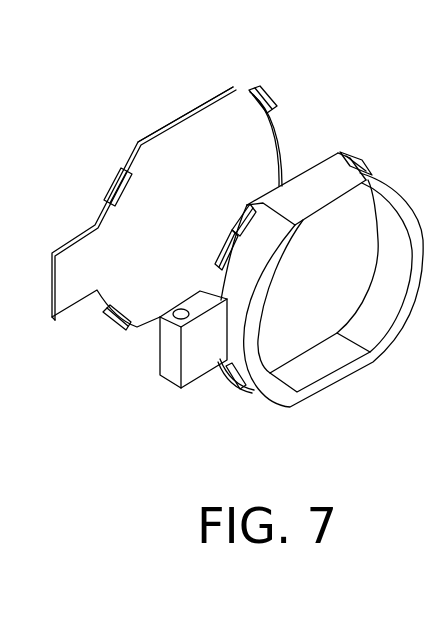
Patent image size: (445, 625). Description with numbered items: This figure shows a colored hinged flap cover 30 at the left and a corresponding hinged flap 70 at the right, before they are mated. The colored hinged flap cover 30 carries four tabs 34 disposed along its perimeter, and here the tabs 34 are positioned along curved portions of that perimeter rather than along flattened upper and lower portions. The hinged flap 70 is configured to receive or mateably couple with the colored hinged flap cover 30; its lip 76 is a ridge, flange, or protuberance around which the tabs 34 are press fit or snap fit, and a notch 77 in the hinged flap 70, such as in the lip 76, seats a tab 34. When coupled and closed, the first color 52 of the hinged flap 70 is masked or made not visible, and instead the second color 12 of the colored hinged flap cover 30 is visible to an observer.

The second color 12 is at (205, 98).
The colored hinged flap cover 30 is at (180, 210).
The tabs 34 is at (108, 182).
The first color 52 is at (333, 151).
The hinged flap 70 is at (338, 287).
The lip 76 is at (238, 209).
The notch 77 is at (229, 255).